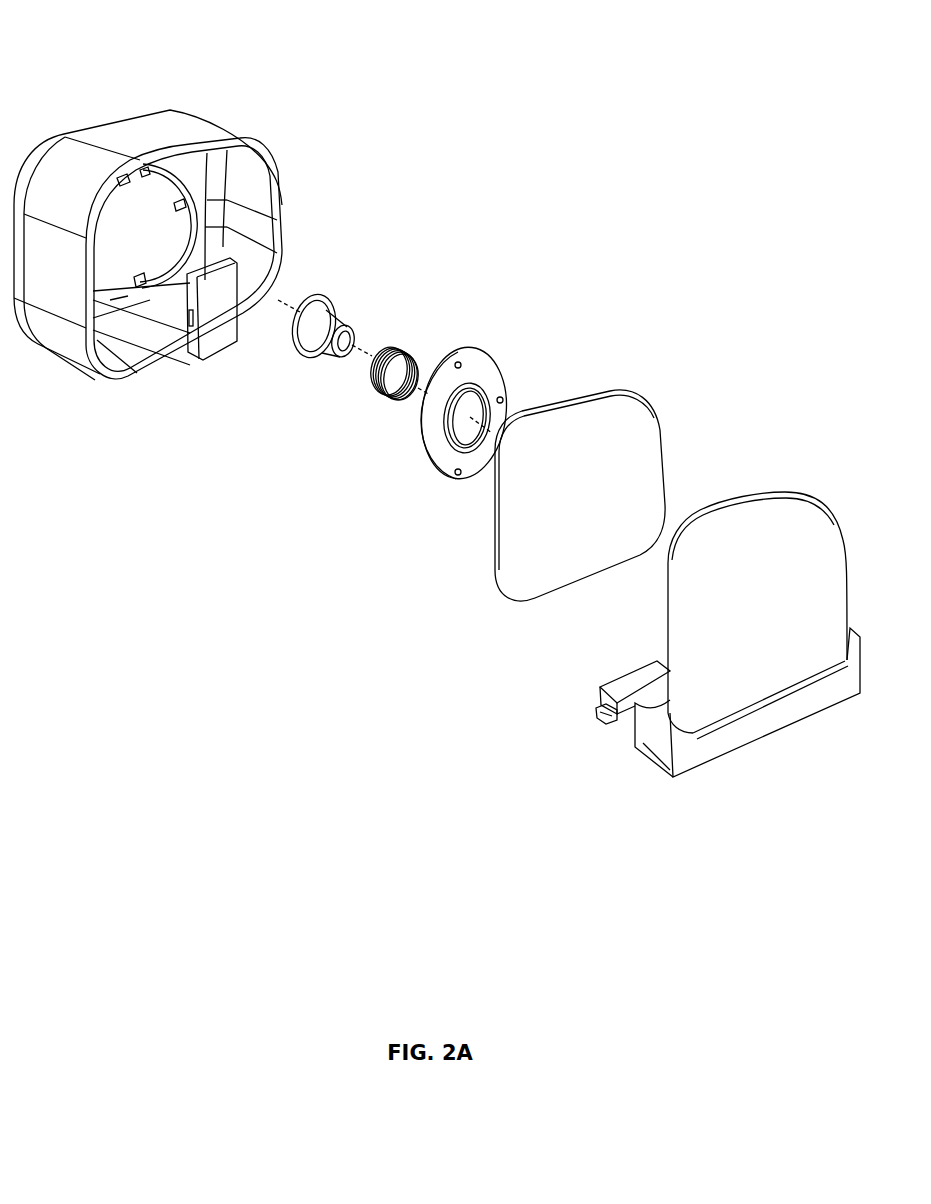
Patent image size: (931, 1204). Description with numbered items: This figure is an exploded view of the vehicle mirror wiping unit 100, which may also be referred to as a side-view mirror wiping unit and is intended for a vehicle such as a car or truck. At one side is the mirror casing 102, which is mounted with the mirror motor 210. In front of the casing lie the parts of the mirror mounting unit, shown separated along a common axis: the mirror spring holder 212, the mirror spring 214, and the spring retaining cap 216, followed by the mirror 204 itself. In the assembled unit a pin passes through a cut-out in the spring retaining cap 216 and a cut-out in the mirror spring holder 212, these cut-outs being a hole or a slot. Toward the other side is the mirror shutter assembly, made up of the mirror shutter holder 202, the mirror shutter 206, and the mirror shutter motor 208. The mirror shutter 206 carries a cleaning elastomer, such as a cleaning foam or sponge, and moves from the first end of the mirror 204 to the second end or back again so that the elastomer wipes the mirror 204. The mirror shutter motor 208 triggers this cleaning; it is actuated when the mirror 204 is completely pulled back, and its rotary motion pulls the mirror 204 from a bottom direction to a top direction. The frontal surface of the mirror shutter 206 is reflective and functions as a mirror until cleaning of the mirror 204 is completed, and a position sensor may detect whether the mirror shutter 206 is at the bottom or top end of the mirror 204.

The vehicle mirror wiping unit 100 is at (276, 926).
The mirror casing 102 is at (148, 125).
The mirror shutter holder 202 is at (706, 745).
The mirror 204 is at (500, 586).
The mirror shutter 206 is at (770, 492).
The mirror shutter motor 208 is at (597, 710).
The mirror motor 210 is at (222, 332).
The mirror spring holder 212 is at (318, 305).
The mirror spring 214 is at (386, 400).
The spring retaining cap 216 is at (421, 417).